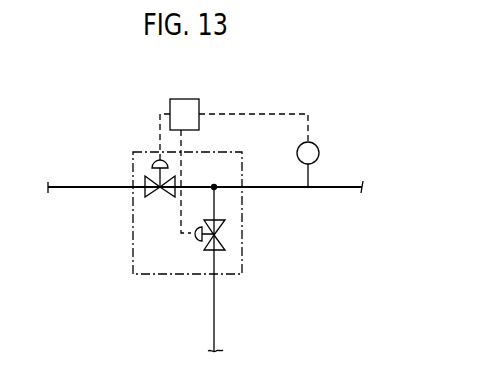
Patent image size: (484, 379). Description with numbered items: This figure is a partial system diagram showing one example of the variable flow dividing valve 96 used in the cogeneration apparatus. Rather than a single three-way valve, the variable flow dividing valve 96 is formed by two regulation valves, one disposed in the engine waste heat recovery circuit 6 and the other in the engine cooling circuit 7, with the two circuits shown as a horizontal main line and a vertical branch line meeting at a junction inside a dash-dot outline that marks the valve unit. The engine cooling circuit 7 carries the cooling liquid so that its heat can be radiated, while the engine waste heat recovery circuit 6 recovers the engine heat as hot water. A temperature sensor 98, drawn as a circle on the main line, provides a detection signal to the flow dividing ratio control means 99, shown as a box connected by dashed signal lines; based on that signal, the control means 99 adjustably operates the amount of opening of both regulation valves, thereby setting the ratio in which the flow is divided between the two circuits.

The engine waste heat recovery circuit 6 is at (216, 310).
The engine cooling circuit 7 is at (88, 185).
The variable flow dividing valve 96 is at (129, 221).
The temperature sensor 98 is at (318, 147).
The flow dividing ratio control means 99 is at (187, 98).